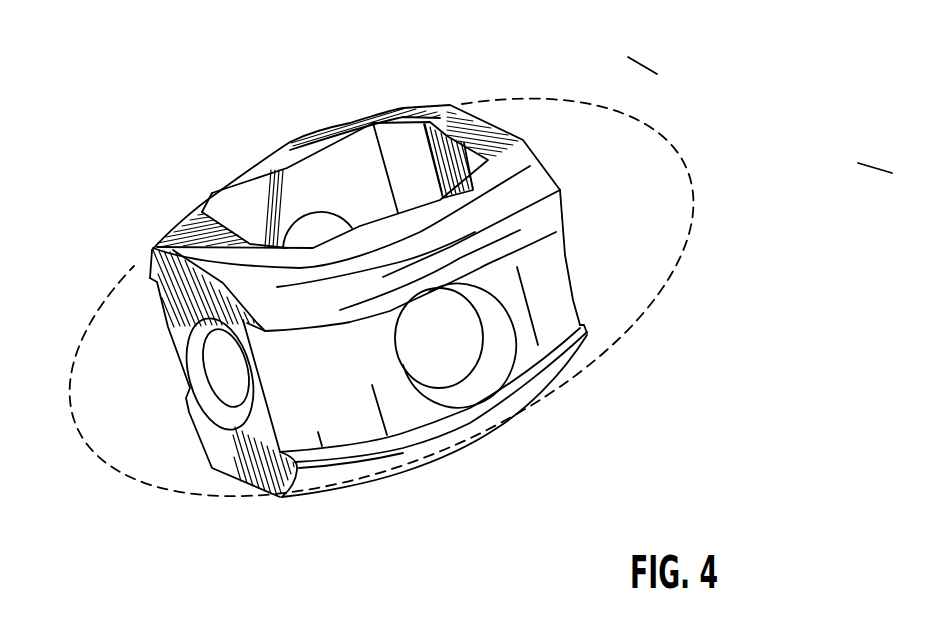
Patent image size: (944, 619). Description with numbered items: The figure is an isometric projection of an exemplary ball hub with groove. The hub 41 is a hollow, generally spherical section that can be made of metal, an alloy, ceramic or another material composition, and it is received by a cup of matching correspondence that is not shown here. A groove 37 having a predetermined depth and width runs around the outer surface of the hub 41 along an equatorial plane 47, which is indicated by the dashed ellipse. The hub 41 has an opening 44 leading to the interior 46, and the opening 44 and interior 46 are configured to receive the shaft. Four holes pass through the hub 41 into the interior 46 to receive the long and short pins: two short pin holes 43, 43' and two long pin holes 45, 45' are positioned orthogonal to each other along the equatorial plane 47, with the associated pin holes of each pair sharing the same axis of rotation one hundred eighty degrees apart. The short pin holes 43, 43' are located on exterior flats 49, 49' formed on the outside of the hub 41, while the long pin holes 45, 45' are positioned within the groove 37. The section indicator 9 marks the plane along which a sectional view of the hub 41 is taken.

The groove 37 is at (151, 278).
The hub 41 is at (414, 101).
The short pin hole 43 is at (183, 374).
The short pin hole 43' is at (596, 271).
The opening 44 is at (290, 142).
The long pin hole 45 is at (455, 403).
The long pin hole 45' is at (320, 157).
The interior 46 is at (298, 187).
The equatorial plane 47 is at (678, 154).
The exterior flat 49 is at (287, 197).
The exterior flat 49' is at (515, 100).
The section line 9- 9 is at (630, 58).